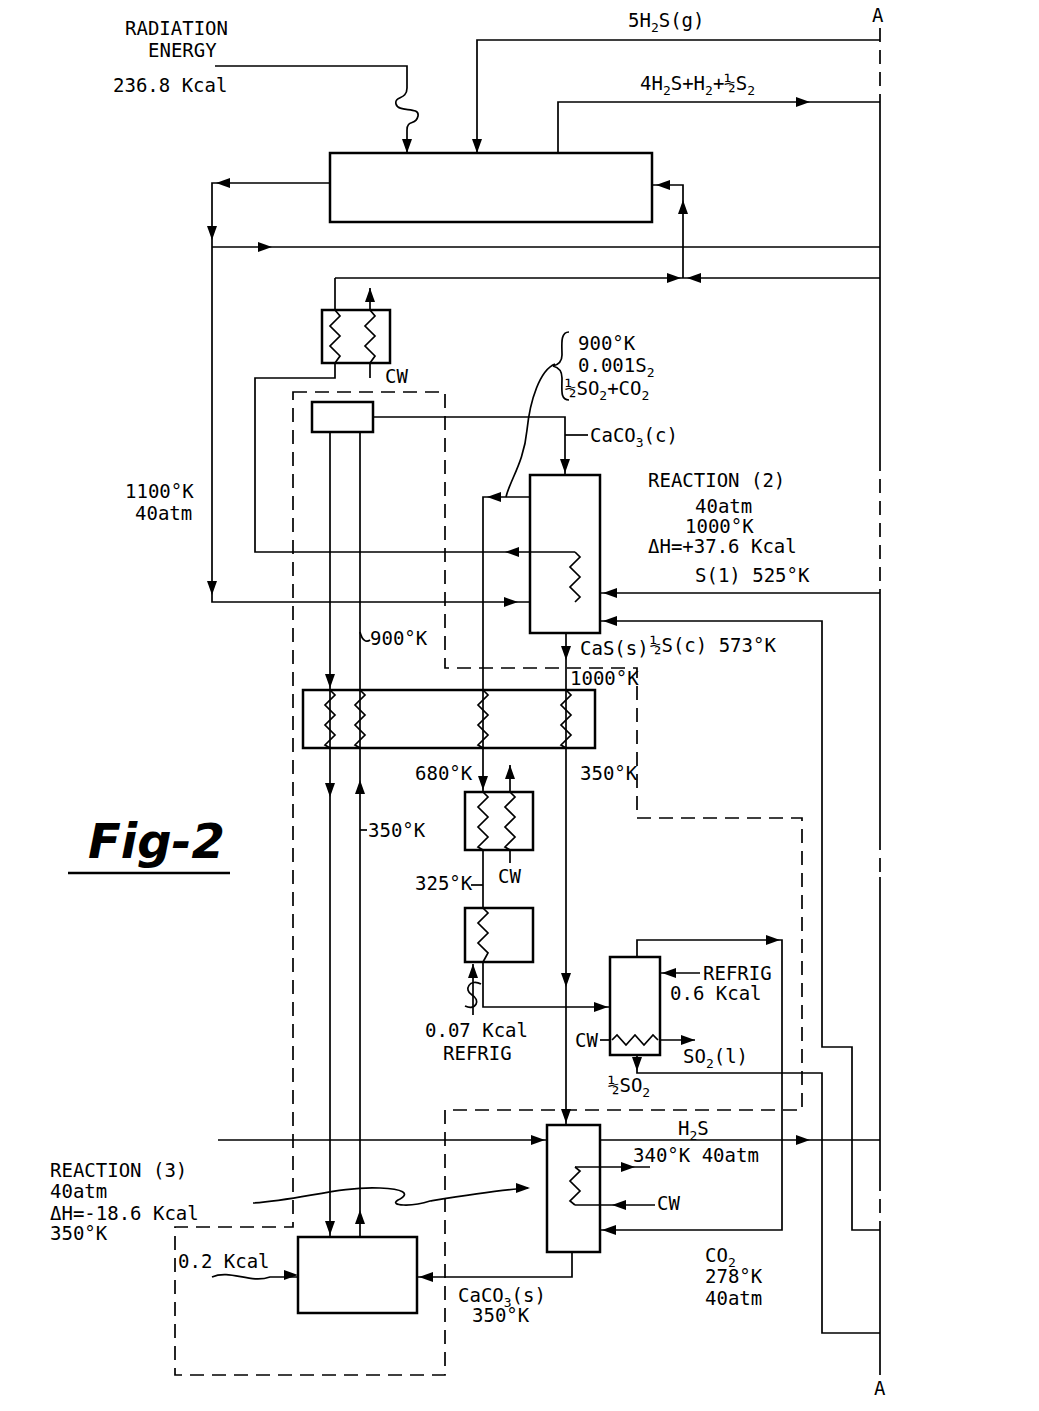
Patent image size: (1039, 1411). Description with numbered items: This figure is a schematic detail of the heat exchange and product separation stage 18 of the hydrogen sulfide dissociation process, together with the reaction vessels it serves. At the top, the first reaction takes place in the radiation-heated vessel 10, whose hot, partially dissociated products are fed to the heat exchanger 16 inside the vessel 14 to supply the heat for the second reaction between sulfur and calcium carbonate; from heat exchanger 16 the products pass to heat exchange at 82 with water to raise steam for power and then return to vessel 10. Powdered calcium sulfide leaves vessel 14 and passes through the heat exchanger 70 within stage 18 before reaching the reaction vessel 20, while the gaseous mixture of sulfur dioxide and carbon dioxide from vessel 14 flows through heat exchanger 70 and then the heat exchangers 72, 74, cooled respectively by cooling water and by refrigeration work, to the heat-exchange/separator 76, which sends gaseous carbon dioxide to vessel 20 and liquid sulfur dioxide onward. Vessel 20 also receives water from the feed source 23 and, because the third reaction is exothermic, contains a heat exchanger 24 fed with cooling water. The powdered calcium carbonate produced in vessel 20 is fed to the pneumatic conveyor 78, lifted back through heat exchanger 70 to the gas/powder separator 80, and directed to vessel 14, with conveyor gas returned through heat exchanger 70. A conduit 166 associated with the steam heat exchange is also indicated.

The vessel 10 is at (652, 168).
The heat exchanger 166 is at (607, 231).
The heat exchange 82 is at (322, 336).
The gas/powder separator 80 is at (365, 432).
The vessel 14 is at (573, 520).
The heat exchanger 16 is at (575, 566).
The heat exchange and product separation stage 18 is at (275, 651).
The heat exchanger 70 is at (595, 735).
The heat exchanger 72 is at (533, 838).
The heat exchanger 74 is at (465, 940).
The heat-exchange/separator 76 is at (660, 1027).
The reaction vessel 20 is at (588, 1155).
The heat exchanger 24 is at (550, 1166).
The pneumatic conveyor 78 is at (417, 1248).
The feed source 23 is at (110, 1118).